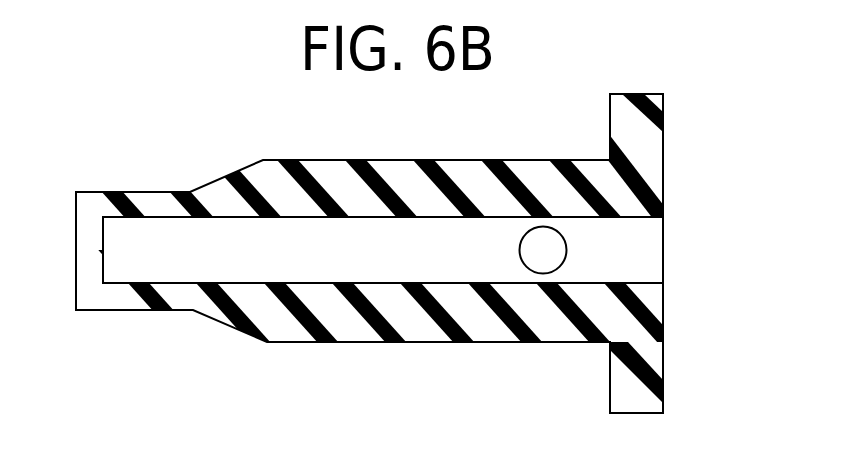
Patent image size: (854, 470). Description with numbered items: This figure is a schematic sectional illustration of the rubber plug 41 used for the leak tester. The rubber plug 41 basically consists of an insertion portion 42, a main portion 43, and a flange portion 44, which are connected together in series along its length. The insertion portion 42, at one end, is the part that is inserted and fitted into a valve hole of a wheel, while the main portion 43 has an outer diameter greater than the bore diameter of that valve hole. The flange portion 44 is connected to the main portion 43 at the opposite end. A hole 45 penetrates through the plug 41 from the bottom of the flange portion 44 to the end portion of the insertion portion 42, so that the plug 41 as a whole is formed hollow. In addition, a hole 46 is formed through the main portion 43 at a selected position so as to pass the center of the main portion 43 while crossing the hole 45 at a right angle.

The rubber plug 41 is at (680, 122).
The insertion portion 42 is at (117, 298).
The main portion 43 is at (357, 328).
The flange portion 44 is at (648, 360).
The hole 45 is at (308, 243).
The hole 46 is at (552, 249).